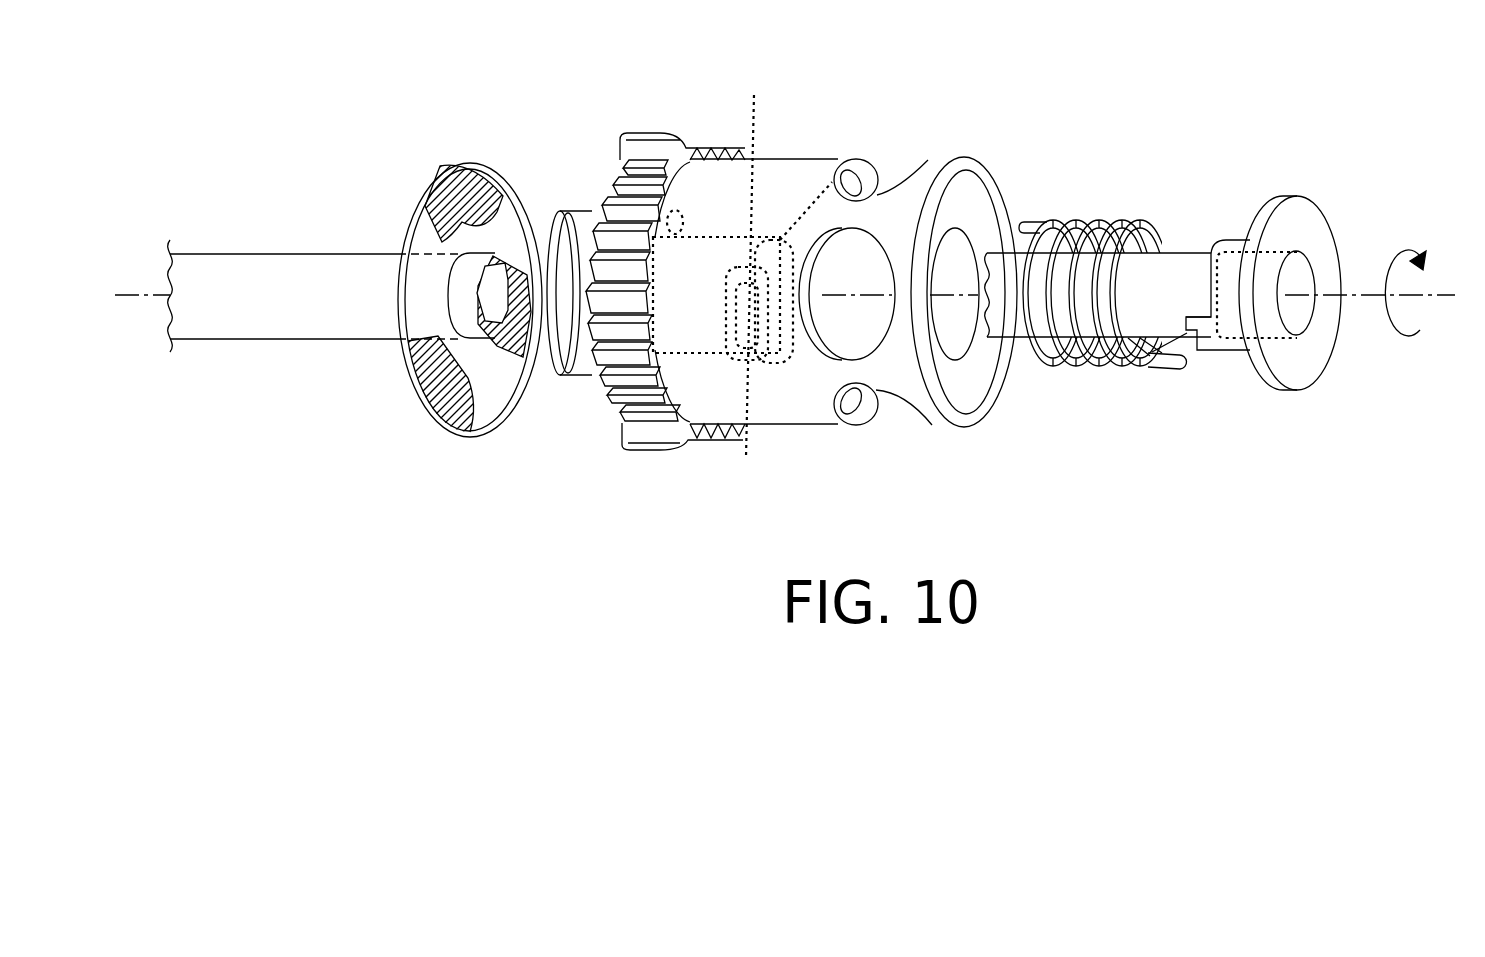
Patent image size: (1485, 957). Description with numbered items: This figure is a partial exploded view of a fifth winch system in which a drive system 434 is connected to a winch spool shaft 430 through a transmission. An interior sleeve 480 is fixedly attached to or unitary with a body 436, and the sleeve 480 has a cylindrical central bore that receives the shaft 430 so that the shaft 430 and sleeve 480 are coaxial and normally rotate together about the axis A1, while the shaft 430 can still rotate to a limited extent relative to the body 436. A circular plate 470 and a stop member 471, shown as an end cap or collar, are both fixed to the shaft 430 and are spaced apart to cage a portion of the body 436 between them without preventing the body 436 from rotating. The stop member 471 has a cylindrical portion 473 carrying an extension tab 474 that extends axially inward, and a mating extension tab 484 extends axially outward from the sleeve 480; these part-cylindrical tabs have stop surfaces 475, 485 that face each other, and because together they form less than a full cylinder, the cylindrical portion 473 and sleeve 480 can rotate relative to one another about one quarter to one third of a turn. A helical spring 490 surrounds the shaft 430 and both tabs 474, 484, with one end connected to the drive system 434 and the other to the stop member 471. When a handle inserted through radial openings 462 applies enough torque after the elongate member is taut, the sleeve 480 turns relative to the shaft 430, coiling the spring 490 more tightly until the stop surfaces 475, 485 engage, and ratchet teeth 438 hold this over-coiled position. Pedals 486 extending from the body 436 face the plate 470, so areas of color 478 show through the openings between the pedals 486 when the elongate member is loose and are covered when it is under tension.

The winch spool shaft 430 is at (248, 250).
The drive system 434 is at (792, 269).
The body 436 is at (808, 412).
The ratchet teeth 438 is at (604, 378).
The radial openings 462 is at (880, 190).
The plate 470 is at (392, 297).
The stop member 471 is at (1311, 370).
The cylindrical portion 473 is at (1226, 350).
The extension tab 474 is at (1165, 368).
The stop surface 475 is at (1192, 316).
The areas of color 478 is at (458, 167).
The interior sleeve 480 is at (759, 256).
The mating extension tab 484 is at (845, 158).
The stop surface 485 is at (780, 363).
The pedals 486 is at (553, 232).
The helical spring 490 is at (1078, 237).
The axis A1 is at (1357, 293).